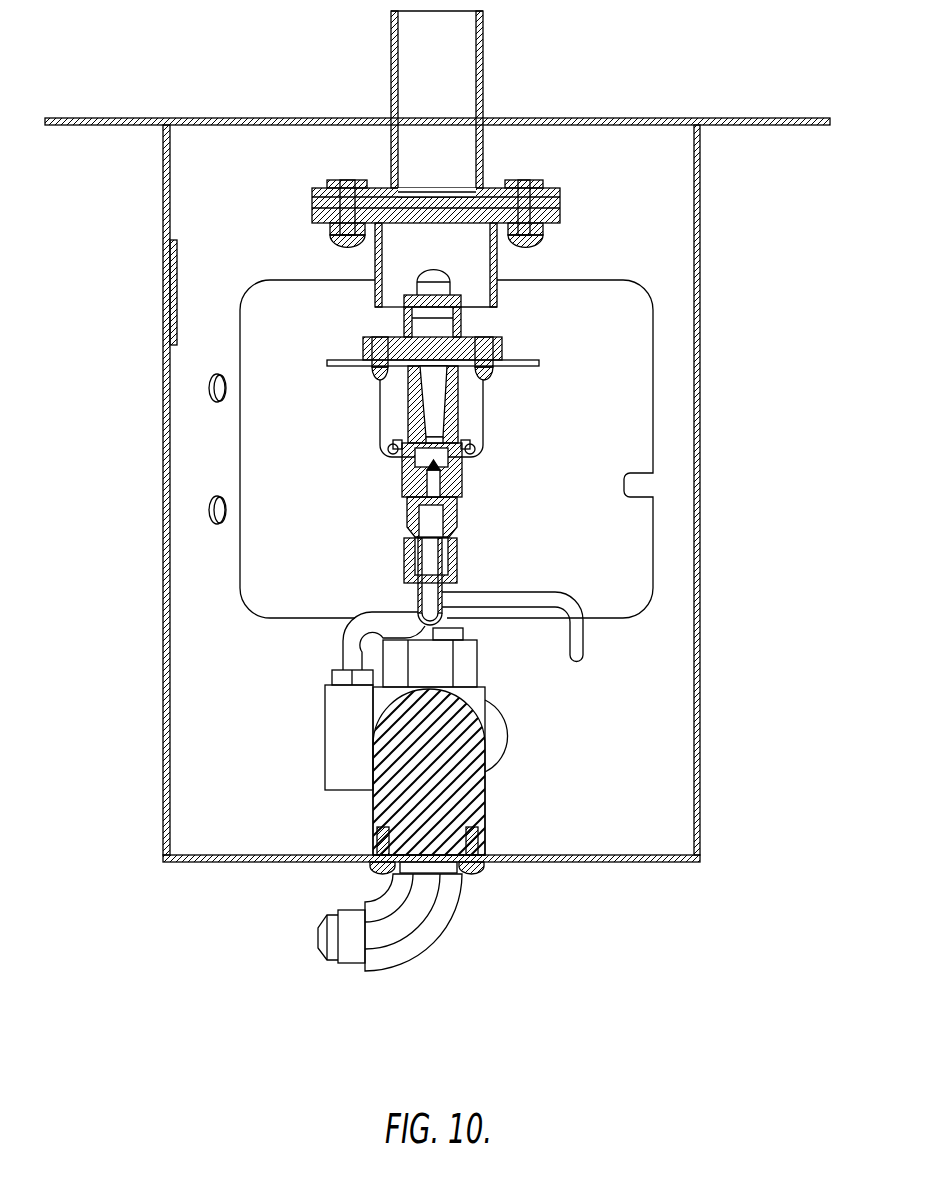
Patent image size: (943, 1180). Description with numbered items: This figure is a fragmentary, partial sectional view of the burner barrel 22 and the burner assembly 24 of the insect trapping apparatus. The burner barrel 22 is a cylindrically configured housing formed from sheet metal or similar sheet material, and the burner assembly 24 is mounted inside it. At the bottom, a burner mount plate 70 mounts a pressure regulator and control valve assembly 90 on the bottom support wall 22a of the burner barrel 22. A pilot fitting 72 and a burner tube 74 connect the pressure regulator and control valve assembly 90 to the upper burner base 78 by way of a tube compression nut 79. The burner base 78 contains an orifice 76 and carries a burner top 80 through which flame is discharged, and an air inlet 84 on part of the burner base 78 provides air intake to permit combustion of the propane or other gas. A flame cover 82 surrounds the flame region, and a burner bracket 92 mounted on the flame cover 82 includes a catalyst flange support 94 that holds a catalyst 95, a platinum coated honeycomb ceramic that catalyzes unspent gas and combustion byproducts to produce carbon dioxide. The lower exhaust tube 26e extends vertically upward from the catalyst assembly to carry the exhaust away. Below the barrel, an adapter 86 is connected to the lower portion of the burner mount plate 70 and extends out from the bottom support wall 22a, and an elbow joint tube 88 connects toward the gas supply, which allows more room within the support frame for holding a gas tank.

The burner barrel 22 is at (700, 490).
The bottom support wall 22a is at (197, 865).
The burner assembly 24 is at (668, 225).
The lower exhaust tube 26e is at (483, 16).
The burner mount plate 70 is at (475, 867).
The pilot fitting 72 is at (327, 680).
The burner tube 74 is at (345, 640).
The orifice 76 is at (440, 515).
The burner base 78 is at (458, 420).
The tube compression nut 79 is at (458, 560).
The burner top 80 is at (461, 320).
The flame cover 82 is at (497, 258).
The air inlet 84 is at (462, 480).
The adapter 86 is at (350, 962).
The elbow joint tube 88 is at (425, 945).
The pressure regulator and control valve assembly 90 is at (490, 778).
The burner bracket 92 is at (327, 222).
The catalyst flange support 94 is at (312, 197).
The catalyst 95 is at (437, 203).